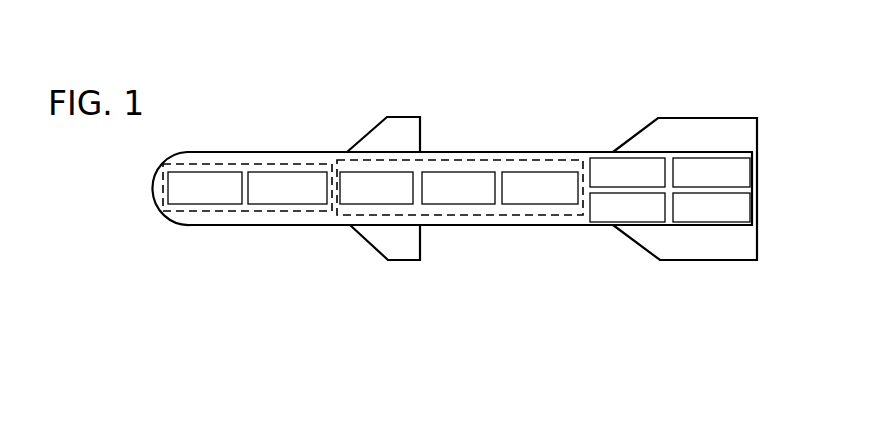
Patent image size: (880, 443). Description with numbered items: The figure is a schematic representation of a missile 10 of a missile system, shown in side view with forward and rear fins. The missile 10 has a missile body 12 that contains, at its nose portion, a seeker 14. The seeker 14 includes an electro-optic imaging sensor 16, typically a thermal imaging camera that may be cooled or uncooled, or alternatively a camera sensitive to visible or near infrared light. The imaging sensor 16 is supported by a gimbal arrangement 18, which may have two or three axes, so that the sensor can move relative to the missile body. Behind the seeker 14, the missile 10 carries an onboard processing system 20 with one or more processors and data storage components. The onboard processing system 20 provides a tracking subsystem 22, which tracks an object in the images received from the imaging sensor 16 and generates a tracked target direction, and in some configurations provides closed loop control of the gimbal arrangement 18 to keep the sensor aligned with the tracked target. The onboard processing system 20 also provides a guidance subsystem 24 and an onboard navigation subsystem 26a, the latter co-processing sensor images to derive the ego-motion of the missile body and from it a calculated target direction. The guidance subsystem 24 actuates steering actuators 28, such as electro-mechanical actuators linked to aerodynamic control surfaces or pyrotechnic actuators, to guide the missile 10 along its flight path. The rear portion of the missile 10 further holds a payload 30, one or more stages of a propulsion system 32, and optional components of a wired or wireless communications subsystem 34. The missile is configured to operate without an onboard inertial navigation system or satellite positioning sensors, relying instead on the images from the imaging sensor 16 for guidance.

The missile 10 is at (440, 165).
The missile body 12 is at (198, 227).
The seeker 14 is at (247, 244).
The electro-optic imaging sensor 16 is at (205, 188).
The gimbal arrangement 18 is at (287, 188).
The onboard processing system 20 is at (456, 242).
The tracking subsystem 22 is at (376, 188).
The guidance subsystem 24 is at (458, 188).
The onboard navigation subsystem 26a is at (540, 188).
The steering actuators 28 is at (627, 172).
The payload 30 is at (711, 172).
The propulsion system 32 is at (627, 207).
The communications subsystem 34 is at (711, 207).